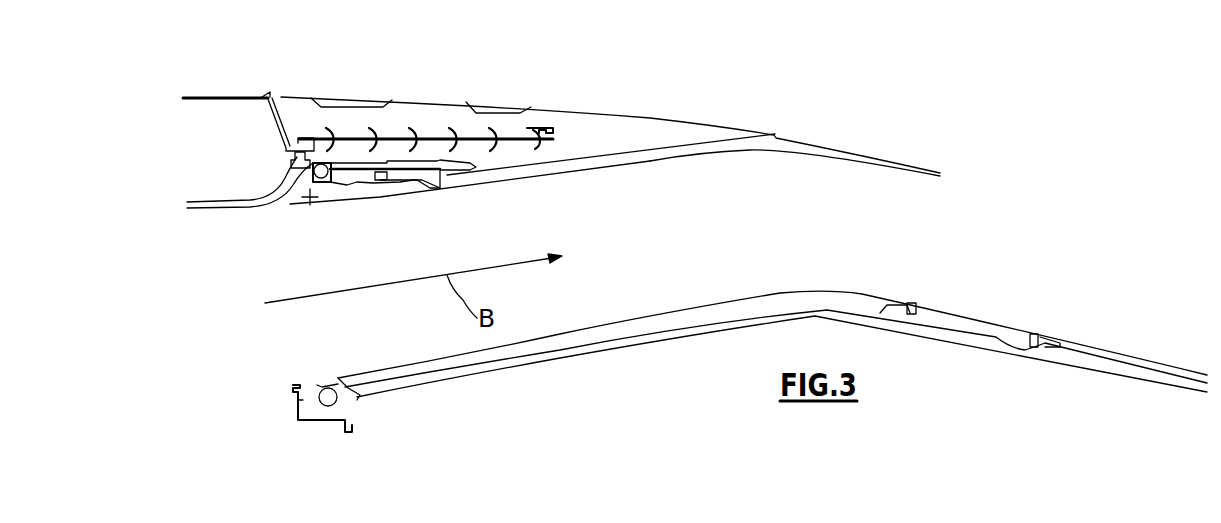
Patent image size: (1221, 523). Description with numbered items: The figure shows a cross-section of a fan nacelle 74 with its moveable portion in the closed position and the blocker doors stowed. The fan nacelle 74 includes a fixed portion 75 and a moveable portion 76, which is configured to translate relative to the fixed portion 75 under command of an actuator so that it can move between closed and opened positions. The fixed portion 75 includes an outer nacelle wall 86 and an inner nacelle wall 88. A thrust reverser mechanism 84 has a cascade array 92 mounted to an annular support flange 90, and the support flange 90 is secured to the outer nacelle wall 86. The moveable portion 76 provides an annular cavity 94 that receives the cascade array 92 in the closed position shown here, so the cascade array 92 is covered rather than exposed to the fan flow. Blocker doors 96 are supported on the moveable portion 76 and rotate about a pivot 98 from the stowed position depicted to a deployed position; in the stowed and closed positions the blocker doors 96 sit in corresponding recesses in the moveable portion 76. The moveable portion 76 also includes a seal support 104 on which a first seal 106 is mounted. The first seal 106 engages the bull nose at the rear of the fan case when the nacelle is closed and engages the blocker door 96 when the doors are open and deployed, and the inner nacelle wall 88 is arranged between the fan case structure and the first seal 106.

The fan nacelle 74 is at (440, 80).
The fixed portion 75 is at (262, 95).
The moveable portion 76 is at (594, 117).
The thrust reverser mechanism 84 is at (470, 111).
The outer nacelle wall 86 is at (217, 97).
The inner nacelle wall 88 is at (219, 209).
The support flange 90 is at (272, 125).
The cascade array 92 is at (394, 133).
The annular cavity 94 is at (610, 146).
The blocker doors 96 is at (387, 190).
The pivot 98 is at (298, 203).
The seal support 104 is at (327, 180).
The first seal 106 is at (321, 182).